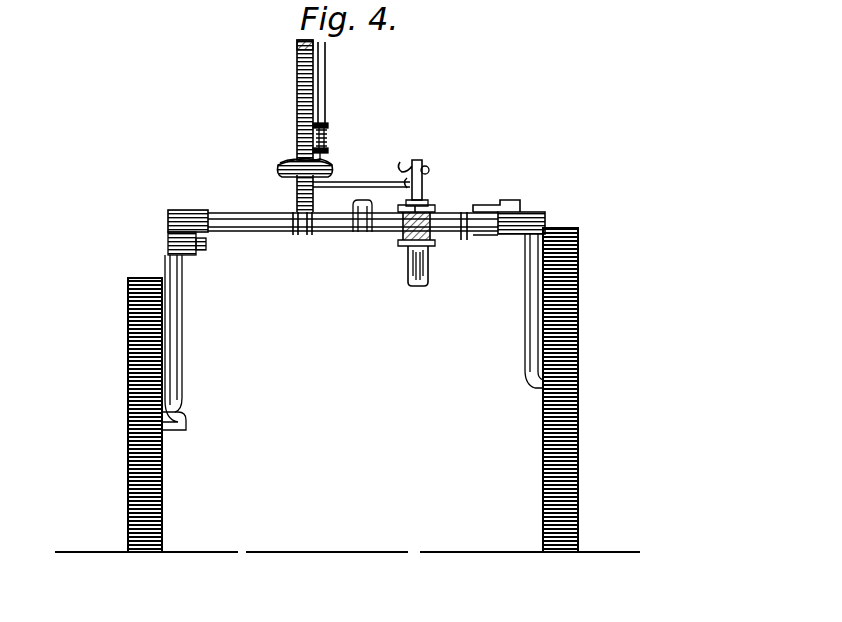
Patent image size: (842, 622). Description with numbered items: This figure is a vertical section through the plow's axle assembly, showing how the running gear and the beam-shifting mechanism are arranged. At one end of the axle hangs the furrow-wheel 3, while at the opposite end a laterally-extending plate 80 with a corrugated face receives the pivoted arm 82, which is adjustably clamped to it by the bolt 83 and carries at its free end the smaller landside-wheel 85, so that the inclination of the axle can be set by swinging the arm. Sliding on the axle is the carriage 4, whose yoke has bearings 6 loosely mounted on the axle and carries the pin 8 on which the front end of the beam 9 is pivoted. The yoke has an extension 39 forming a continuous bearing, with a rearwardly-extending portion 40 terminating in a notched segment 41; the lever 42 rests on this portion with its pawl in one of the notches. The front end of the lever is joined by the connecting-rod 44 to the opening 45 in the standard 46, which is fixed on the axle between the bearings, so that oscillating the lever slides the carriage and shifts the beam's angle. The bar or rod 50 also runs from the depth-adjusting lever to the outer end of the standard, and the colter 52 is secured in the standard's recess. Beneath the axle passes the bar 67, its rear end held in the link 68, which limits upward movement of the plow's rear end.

The furrow-wheel 3 is at (578, 418).
The carriage 4 is at (445, 208).
The bearings 6 is at (295, 236).
The pin 8 is at (424, 196).
The beam 9 is at (403, 242).
The extension 39 is at (332, 233).
The rearwardly-extending portion 40 is at (297, 196).
The notched segment 41 is at (290, 162).
The lever 42 is at (300, 78).
The connecting-rod 44 is at (347, 186).
The opening 45 is at (406, 180).
The standard 46 is at (412, 160).
The bar or rod 50 is at (430, 168).
The colter 52 is at (515, 280).
The bar 67 is at (428, 280).
The link 68 is at (408, 274).
The plate 80 is at (200, 211).
The arm 82 is at (185, 346).
The bolt 83 is at (206, 248).
The landside-wheel 85 is at (120, 415).